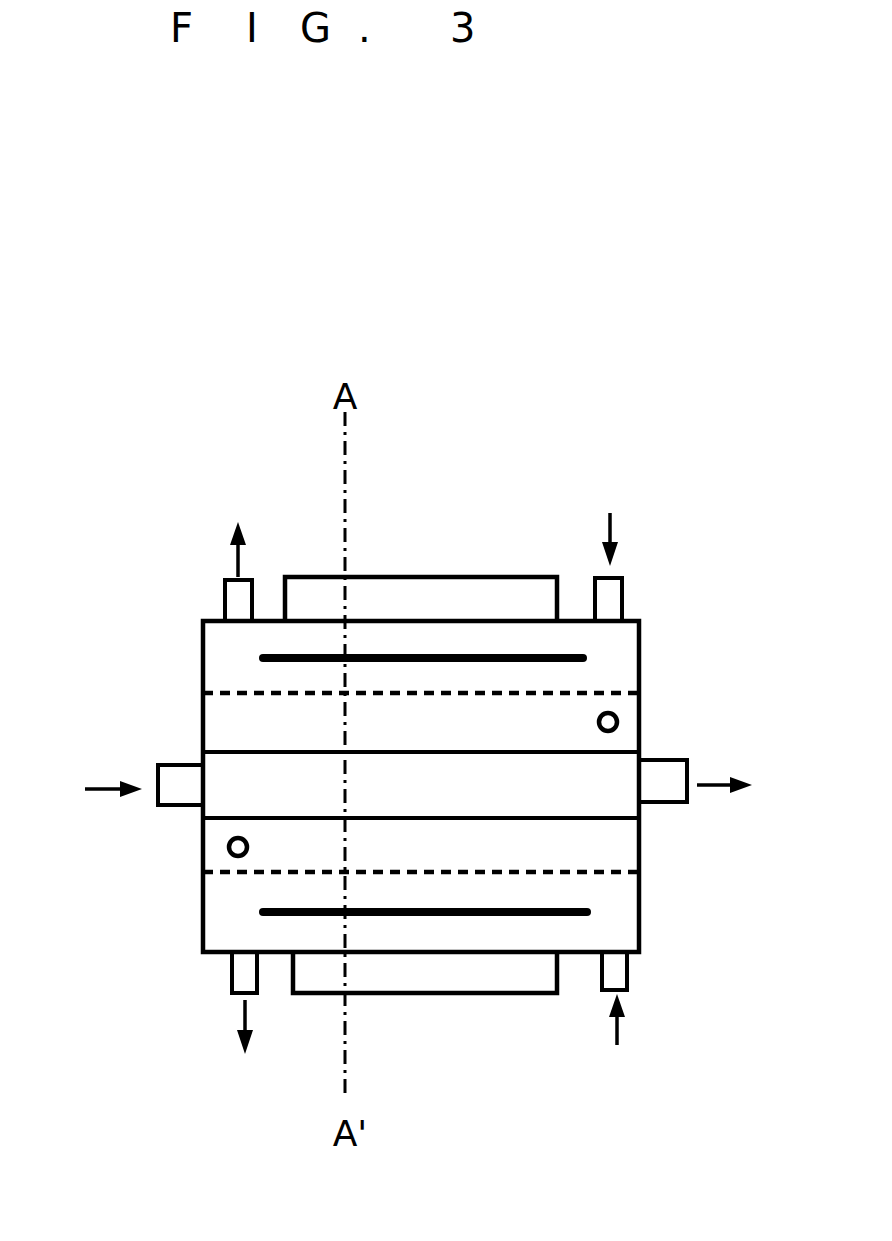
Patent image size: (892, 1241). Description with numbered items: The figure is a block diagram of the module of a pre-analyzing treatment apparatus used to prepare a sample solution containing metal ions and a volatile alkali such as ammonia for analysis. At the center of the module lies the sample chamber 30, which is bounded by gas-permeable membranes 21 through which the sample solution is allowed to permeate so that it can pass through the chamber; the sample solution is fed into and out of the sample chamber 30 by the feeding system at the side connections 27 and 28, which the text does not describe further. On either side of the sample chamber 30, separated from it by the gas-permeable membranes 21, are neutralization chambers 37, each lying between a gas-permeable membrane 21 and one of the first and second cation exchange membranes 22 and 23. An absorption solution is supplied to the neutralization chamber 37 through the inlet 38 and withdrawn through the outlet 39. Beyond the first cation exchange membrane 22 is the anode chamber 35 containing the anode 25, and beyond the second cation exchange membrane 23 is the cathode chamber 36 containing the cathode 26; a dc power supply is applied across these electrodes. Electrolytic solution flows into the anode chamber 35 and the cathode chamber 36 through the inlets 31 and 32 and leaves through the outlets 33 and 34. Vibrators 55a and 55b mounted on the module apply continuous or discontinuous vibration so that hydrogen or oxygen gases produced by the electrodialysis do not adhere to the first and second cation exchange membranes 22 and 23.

The gas-permeable membranes 21 is at (640, 740).
The first cation exchange membrane 22 is at (613, 693).
The second cation exchange membrane 23 is at (595, 870).
The anode 25 is at (385, 656).
The cathode 26 is at (430, 915).
The inlet port 27 is at (168, 808).
The outlet port 28 is at (672, 803).
The sample chamber 30 is at (255, 770).
The inlet 31 is at (615, 578).
The inlet 32 is at (625, 990).
The outlet 33 is at (228, 578).
The outlet 34 is at (232, 995).
The anode chamber 35 is at (230, 675).
The cathode chamber 36 is at (228, 925).
The neutralization chamber 37 is at (207, 860).
The inlet 38 is at (248, 847).
The outlet 39 is at (598, 722).
The vibrator 55a is at (540, 583).
The vibrator 55b is at (548, 980).